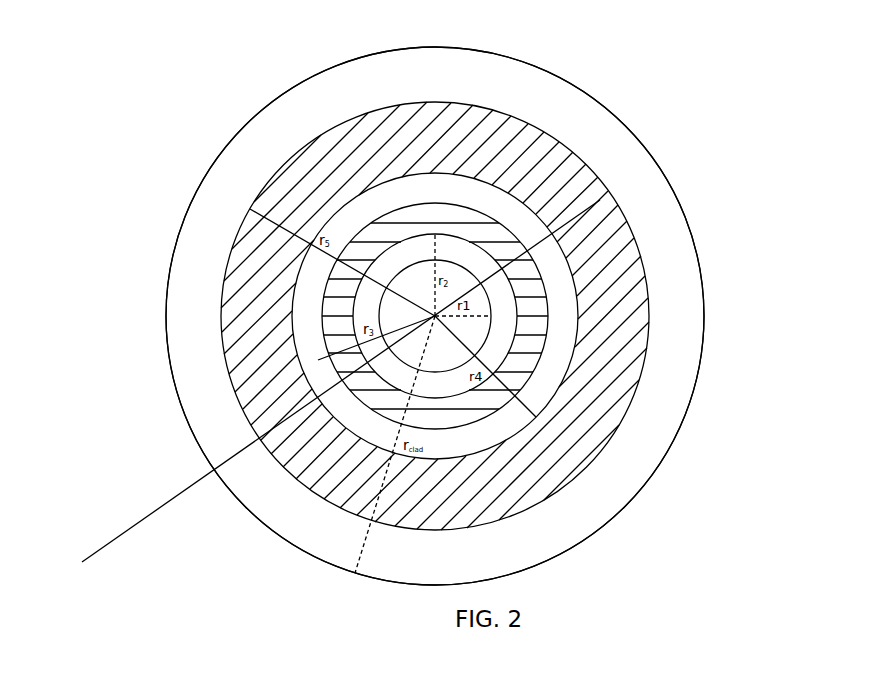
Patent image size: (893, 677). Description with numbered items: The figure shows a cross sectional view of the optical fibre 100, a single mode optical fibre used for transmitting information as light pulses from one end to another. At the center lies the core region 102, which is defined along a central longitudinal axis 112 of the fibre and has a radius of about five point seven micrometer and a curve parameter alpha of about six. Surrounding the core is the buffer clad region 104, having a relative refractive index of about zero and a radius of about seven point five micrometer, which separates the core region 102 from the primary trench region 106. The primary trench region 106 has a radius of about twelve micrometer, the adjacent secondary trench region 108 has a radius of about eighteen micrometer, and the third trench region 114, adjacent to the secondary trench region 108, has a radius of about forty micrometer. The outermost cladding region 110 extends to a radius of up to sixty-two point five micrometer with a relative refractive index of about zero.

The optical fibre 100 is at (63, 40).
The core region 102 is at (460, 282).
The buffer clad region 104 is at (492, 290).
The primary trench region 106 is at (347, 310).
The secondary trench region 108 is at (547, 382).
The cladding region 110 is at (340, 543).
The central longitudinal axis 112 is at (177, 493).
The third trench region 114 is at (324, 197).